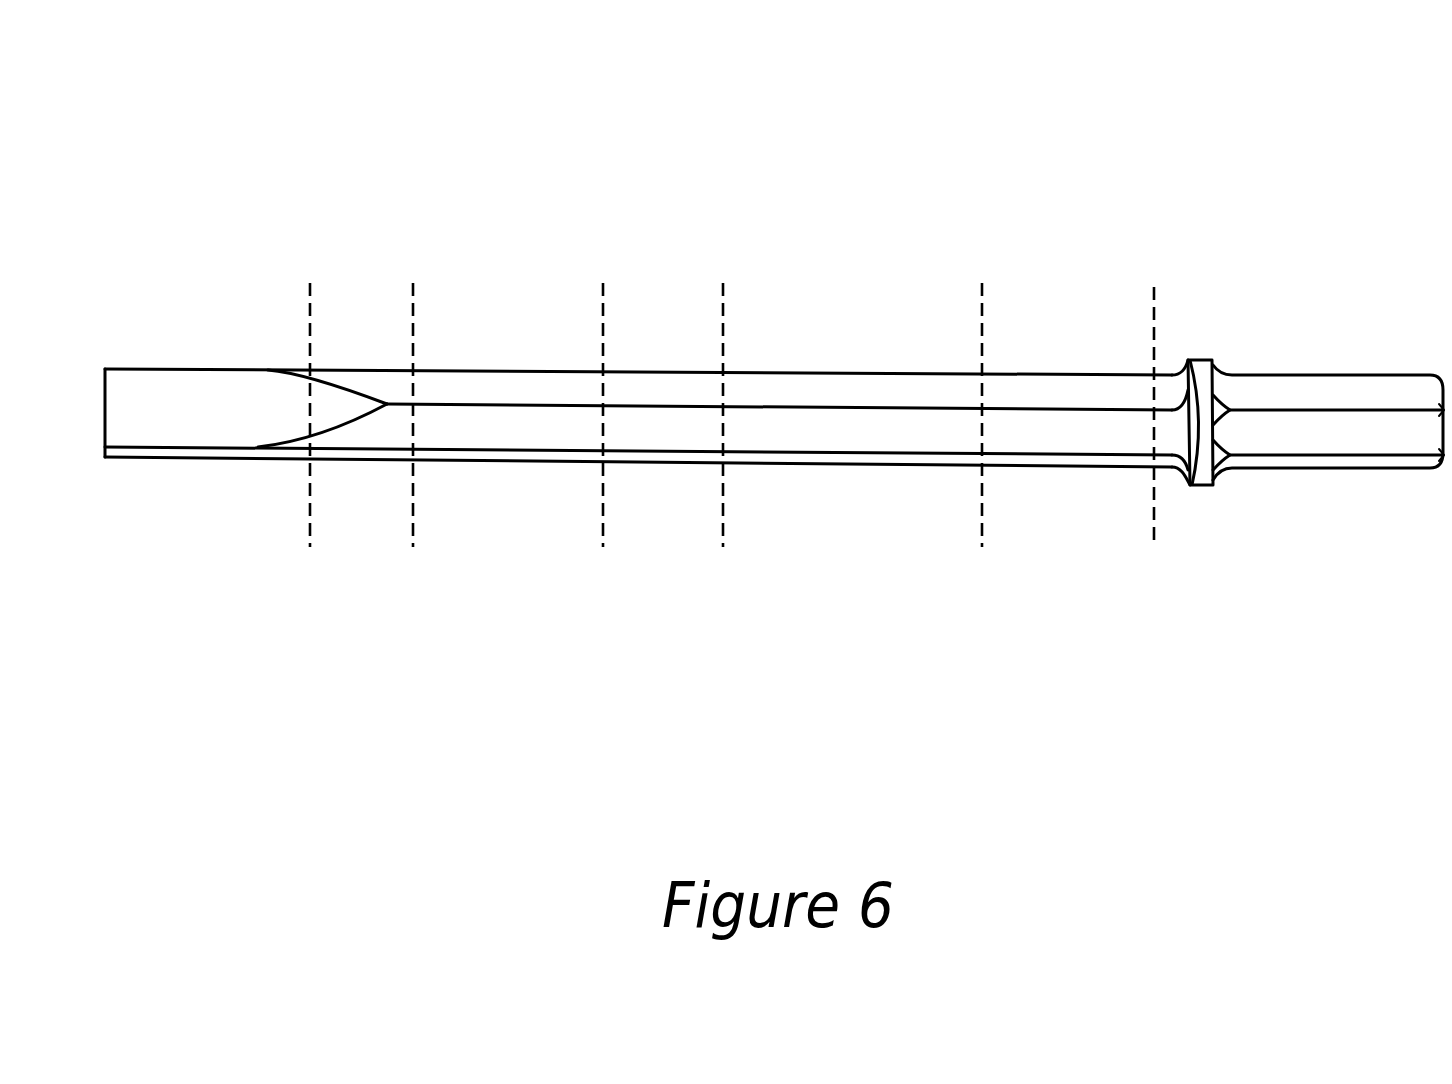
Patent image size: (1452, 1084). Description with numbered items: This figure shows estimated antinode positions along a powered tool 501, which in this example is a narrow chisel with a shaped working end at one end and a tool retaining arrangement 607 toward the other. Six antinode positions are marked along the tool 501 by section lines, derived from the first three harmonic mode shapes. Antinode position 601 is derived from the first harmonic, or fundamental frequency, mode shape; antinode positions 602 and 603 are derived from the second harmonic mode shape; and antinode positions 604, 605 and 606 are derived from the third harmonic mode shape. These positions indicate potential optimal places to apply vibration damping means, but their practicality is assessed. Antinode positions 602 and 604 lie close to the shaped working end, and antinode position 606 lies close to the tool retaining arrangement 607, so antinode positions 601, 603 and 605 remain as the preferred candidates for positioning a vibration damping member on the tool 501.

The tool 501 is at (774, 445).
The antinode position 601 is at (603, 307).
The antinode position 602 is at (413, 348).
The antinode position 603 is at (982, 295).
The antinode position 604 is at (310, 305).
The antinode position 605 is at (723, 330).
The antinode position 606 is at (1154, 313).
The tool retaining arrangement 607 is at (1208, 377).